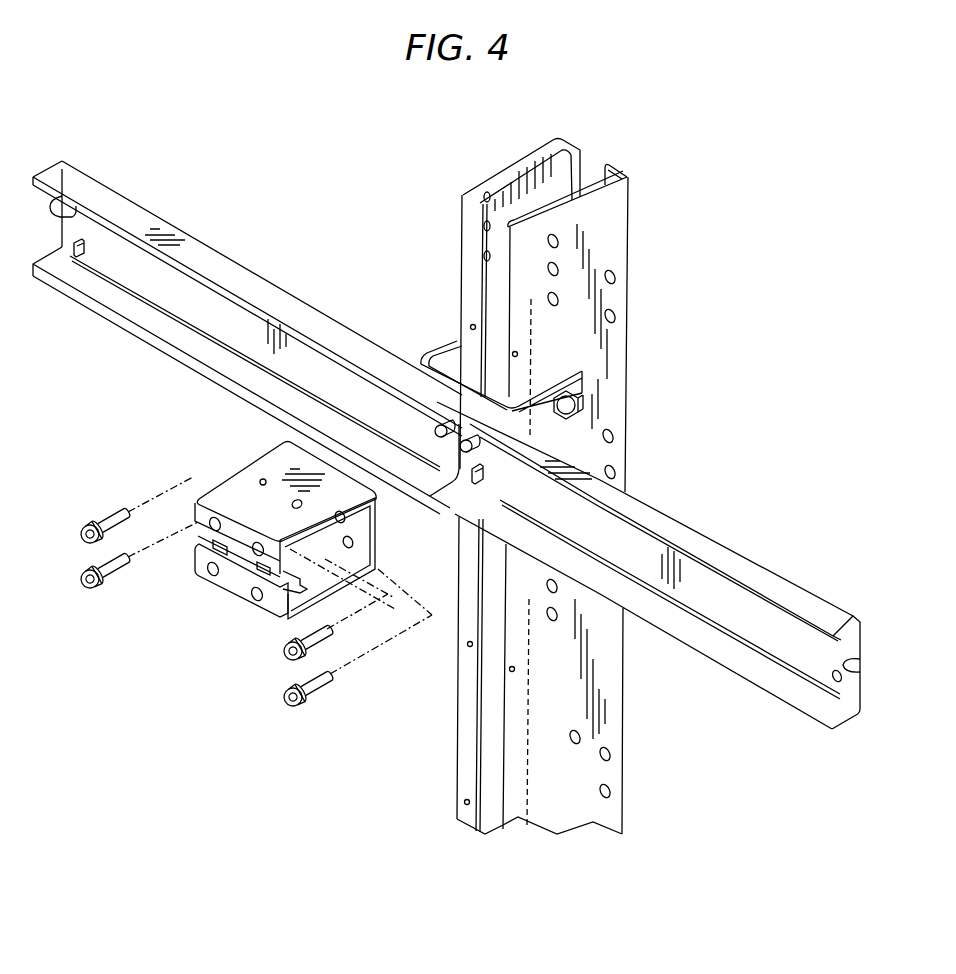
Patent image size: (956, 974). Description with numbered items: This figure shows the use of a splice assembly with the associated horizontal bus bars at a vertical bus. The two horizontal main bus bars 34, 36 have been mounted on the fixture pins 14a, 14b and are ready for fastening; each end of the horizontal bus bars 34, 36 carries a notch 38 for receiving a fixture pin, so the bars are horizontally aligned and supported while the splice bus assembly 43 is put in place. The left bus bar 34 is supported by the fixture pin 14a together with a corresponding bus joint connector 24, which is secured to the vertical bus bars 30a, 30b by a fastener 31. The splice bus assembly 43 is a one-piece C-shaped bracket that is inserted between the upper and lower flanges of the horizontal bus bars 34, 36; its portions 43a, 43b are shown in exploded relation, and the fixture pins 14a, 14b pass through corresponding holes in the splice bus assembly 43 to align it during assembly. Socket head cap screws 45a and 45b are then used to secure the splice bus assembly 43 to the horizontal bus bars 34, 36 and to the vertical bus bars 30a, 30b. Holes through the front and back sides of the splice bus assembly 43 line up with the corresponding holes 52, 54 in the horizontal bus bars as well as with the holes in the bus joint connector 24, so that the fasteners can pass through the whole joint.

The fixture pin 14a is at (438, 428).
The fixture pin 14b is at (490, 437).
The bus joint connector 24 is at (573, 445).
The vertical bus bar 30a is at (512, 161).
The vertical bus bar 30b is at (630, 222).
The fastener 31 is at (583, 403).
The horizontal main bus bar 34 is at (263, 273).
The horizontal main bus bar 36 is at (742, 555).
The notch 38 is at (53, 198).
The splice bus assembly 43 is at (262, 482).
The bracket channel portion 43a is at (330, 498).
The bracket plate 43b is at (232, 594).
The socket head cap screw 45a is at (79, 535).
The socket head cap screw 45b is at (279, 657).
The hole 52 is at (840, 641).
The hole 54 is at (72, 250).